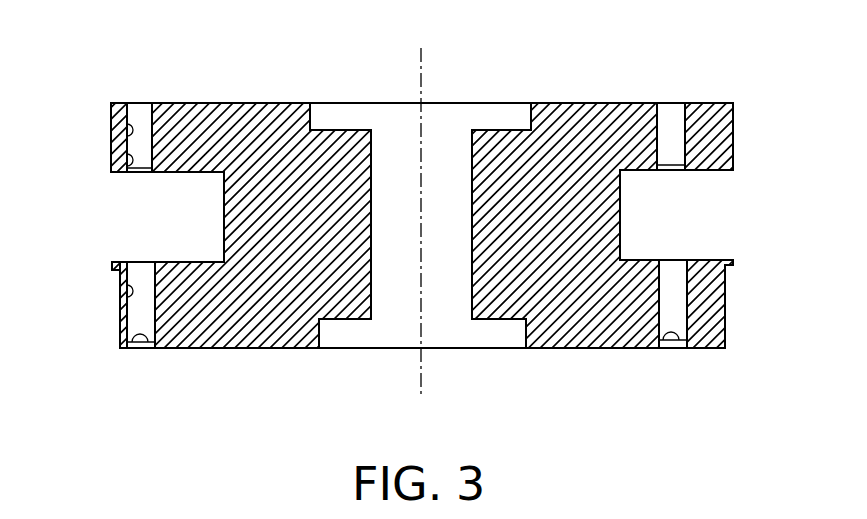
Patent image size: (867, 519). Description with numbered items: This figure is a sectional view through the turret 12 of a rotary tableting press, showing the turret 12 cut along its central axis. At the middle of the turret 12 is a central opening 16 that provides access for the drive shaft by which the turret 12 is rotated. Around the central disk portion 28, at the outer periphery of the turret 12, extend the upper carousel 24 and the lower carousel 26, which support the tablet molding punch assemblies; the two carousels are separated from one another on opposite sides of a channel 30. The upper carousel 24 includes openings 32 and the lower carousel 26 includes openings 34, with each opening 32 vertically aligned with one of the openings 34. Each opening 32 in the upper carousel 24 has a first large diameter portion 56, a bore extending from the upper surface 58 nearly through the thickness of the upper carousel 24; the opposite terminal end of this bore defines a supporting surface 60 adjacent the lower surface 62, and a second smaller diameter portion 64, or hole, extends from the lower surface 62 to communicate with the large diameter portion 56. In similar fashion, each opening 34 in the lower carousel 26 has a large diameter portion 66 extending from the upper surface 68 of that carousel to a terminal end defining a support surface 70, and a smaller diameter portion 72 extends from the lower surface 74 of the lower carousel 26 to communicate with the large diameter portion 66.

The turret 12 is at (262, 103).
The central opening 16 is at (371, 168).
The upper carousel 24 is at (172, 103).
The lower carousel 26 is at (204, 349).
The central disk portion 28 is at (226, 236).
The channel 30 is at (178, 262).
The openings 32 is at (132, 103).
The openings 34 is at (123, 328).
The first large diameter portion 56 is at (125, 128).
The upper surface 58 is at (214, 103).
The supporting surface 60 is at (122, 149).
The lower surface 62 is at (199, 172).
The second smaller diameter portion 64 is at (137, 173).
The large diameter portion 66 is at (150, 304).
The upper surface 68 is at (148, 262).
The support surface 70 is at (137, 349).
The smaller diameter portion 72 is at (145, 350).
The lower surface 74 is at (240, 349).